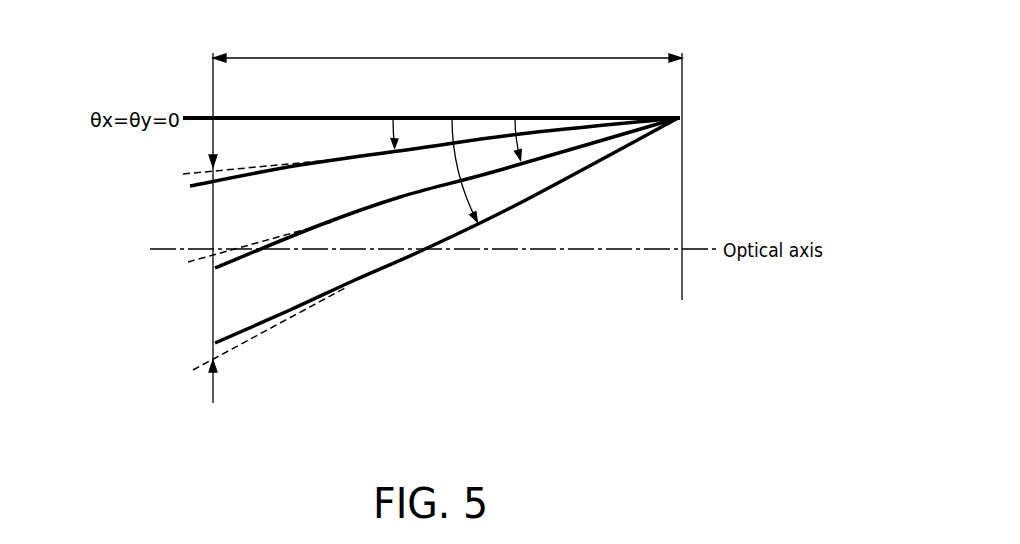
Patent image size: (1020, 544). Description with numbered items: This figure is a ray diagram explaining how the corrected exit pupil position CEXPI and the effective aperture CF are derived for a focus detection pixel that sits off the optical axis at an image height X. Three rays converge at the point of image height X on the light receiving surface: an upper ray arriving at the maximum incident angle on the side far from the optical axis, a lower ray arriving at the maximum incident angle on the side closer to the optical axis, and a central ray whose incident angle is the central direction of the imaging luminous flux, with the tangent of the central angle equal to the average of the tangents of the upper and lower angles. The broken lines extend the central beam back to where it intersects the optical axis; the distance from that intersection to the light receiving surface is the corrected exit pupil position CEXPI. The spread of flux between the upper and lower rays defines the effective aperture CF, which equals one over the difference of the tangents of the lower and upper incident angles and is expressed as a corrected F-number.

The corrected exit pupil position CEXPI is at (447, 47).
The image height X is at (697, 120).
The effective aperture CF is at (215, 307).